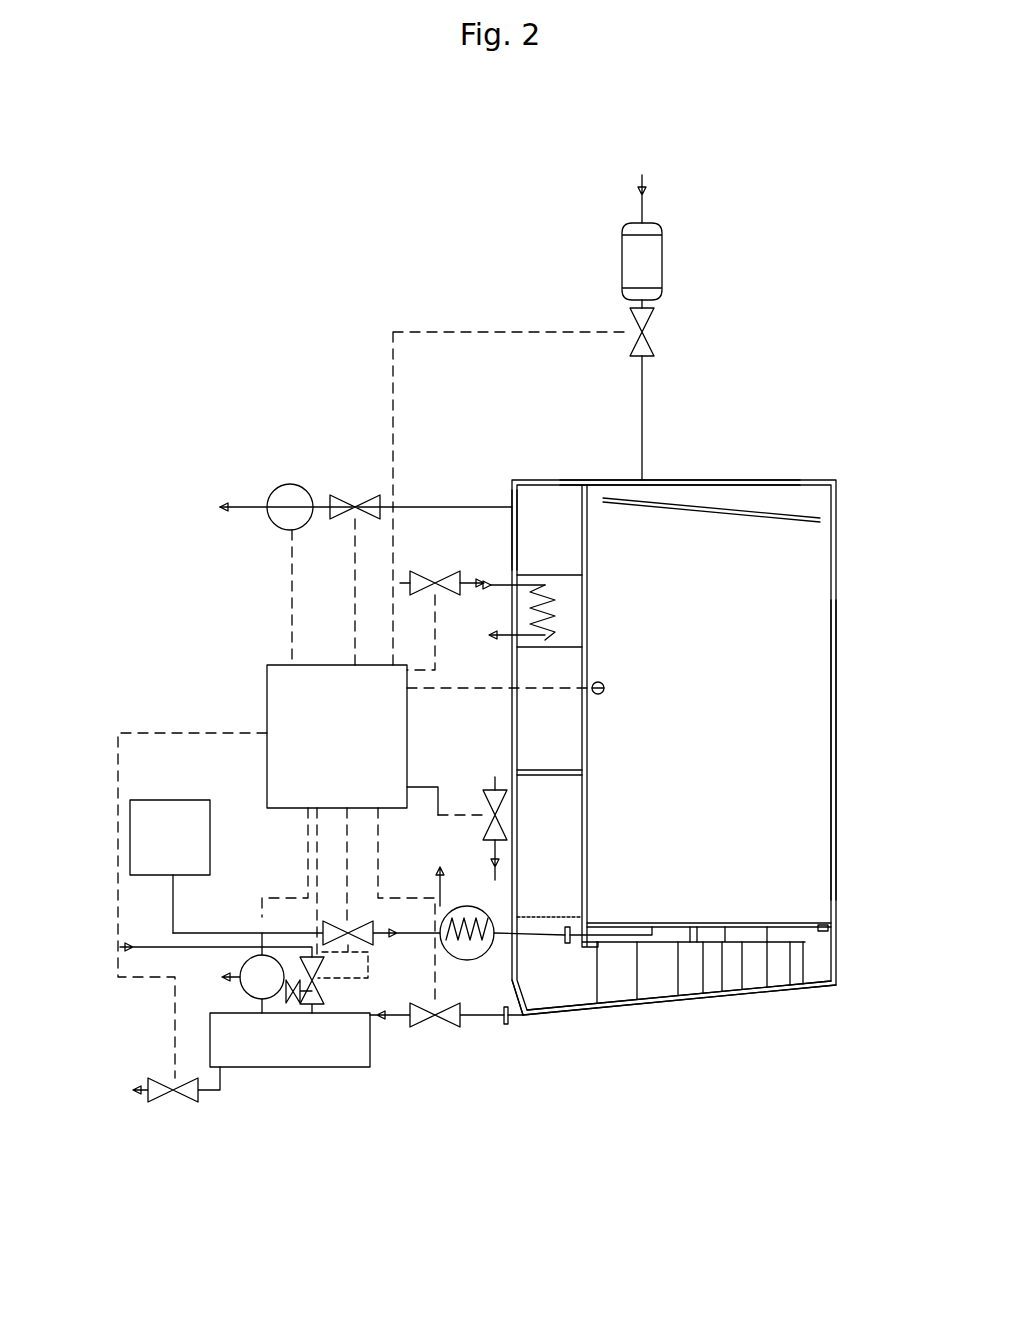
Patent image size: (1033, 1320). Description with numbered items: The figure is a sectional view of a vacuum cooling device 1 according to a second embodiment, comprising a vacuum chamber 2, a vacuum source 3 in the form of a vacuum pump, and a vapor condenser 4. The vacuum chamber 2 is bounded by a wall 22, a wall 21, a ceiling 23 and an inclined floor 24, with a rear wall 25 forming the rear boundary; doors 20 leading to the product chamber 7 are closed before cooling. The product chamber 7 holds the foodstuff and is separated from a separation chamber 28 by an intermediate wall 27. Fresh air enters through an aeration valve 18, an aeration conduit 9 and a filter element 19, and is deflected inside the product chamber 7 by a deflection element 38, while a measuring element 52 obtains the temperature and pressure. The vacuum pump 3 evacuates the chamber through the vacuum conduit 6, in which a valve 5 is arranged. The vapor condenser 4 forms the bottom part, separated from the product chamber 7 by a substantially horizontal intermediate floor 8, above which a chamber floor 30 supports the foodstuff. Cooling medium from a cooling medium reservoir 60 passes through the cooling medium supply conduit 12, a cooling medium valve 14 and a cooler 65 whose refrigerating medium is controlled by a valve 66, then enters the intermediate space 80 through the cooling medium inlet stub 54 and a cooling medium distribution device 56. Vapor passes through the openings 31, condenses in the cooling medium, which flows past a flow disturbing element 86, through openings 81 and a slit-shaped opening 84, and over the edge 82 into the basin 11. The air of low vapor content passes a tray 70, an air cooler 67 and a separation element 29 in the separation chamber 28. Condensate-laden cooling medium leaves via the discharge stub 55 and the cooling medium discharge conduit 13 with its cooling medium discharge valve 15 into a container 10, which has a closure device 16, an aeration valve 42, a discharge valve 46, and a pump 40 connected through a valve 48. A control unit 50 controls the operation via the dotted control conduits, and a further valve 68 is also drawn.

The vacuum cooling device 1 is at (722, 435).
The vacuum chamber 2 is at (563, 478).
The vacuum source 3 is at (284, 510).
The vapor condenser 4 is at (840, 1020).
The valve 5 is at (337, 495).
The vacuum conduit 6 is at (438, 505).
The product chamber 7 is at (732, 556).
The intermediate floor 8 is at (728, 935).
The aeration conduit 9 is at (640, 407).
The container 10 is at (289, 1053).
The basin 11 is at (678, 1007).
The cooling medium supply conduit 12 is at (170, 932).
The cooling medium discharge conduit 13 is at (497, 1027).
The cooling medium valve 14 is at (361, 945).
The cooling medium discharge valve 15 is at (447, 1030).
The closure device 16 is at (209, 1043).
The aeration valve 18 is at (632, 318).
The filter element 19 is at (623, 252).
The doors 20 is at (832, 815).
The wall 21 is at (840, 497).
The wall 22 is at (517, 612).
The ceiling 23 is at (665, 480).
The floor 24 is at (624, 1025).
The rear wall 25 is at (630, 672).
The intermediate wall 27 is at (588, 742).
The separation chamber 28 is at (556, 805).
The separation element 29 is at (576, 772).
The chamber floor 30 is at (820, 920).
The openings 31 is at (636, 924).
The deflection element 38 is at (767, 512).
The pump 40 is at (266, 988).
The aeration valve 42 is at (323, 1003).
The valve 46 is at (178, 1104).
The valve 48 is at (296, 1005).
The control unit 50 is at (284, 695).
The measuring element 52 is at (606, 688).
The cooling medium inlet stub 54 is at (572, 943).
The discharge stub 55 is at (509, 1026).
The cooling medium distribution device 56 is at (596, 925).
The cooling medium reservoir 60 is at (148, 845).
The cooler 65 is at (468, 920).
The valve 66 is at (497, 800).
The air cooler 67 is at (569, 628).
The valve 68 is at (456, 578).
The tray 70 is at (545, 915).
The intermediate space 80 is at (742, 922).
The openings 81 is at (599, 940).
The edge 82 is at (803, 945).
The opening 84 is at (699, 945).
The flow disturbing element 86 is at (683, 935).